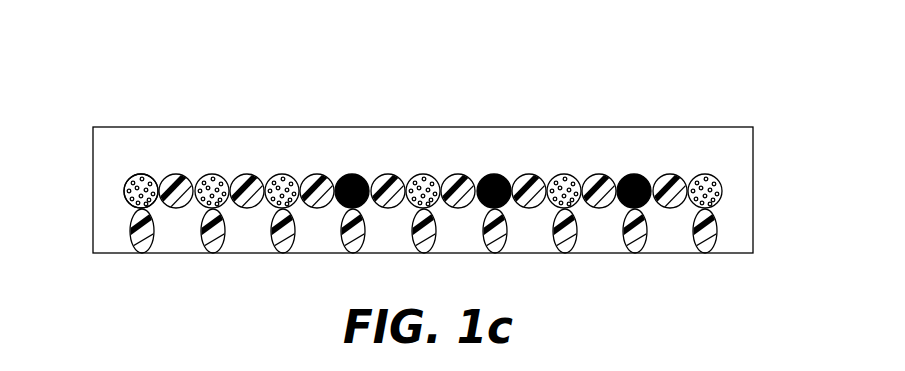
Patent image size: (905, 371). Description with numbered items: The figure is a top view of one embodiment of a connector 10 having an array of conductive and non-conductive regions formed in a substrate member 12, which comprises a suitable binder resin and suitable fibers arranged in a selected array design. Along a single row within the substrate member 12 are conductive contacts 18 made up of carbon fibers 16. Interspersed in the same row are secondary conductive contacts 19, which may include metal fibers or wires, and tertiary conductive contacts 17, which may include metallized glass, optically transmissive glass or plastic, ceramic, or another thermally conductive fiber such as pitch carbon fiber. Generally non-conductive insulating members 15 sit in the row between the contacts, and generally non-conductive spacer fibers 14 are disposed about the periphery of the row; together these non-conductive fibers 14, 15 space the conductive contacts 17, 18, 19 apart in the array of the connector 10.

The connector 10 is at (728, 70).
The substrate member 12 is at (753, 167).
The non-conductive spacer fibers 14 is at (214, 245).
The insulating members 15 is at (670, 174).
The carbon fibers 16 is at (128, 180).
The tertiary conductive contacts 17 is at (634, 174).
The conductive contacts 18 is at (141, 174).
The secondary conductive contacts 19 is at (352, 174).